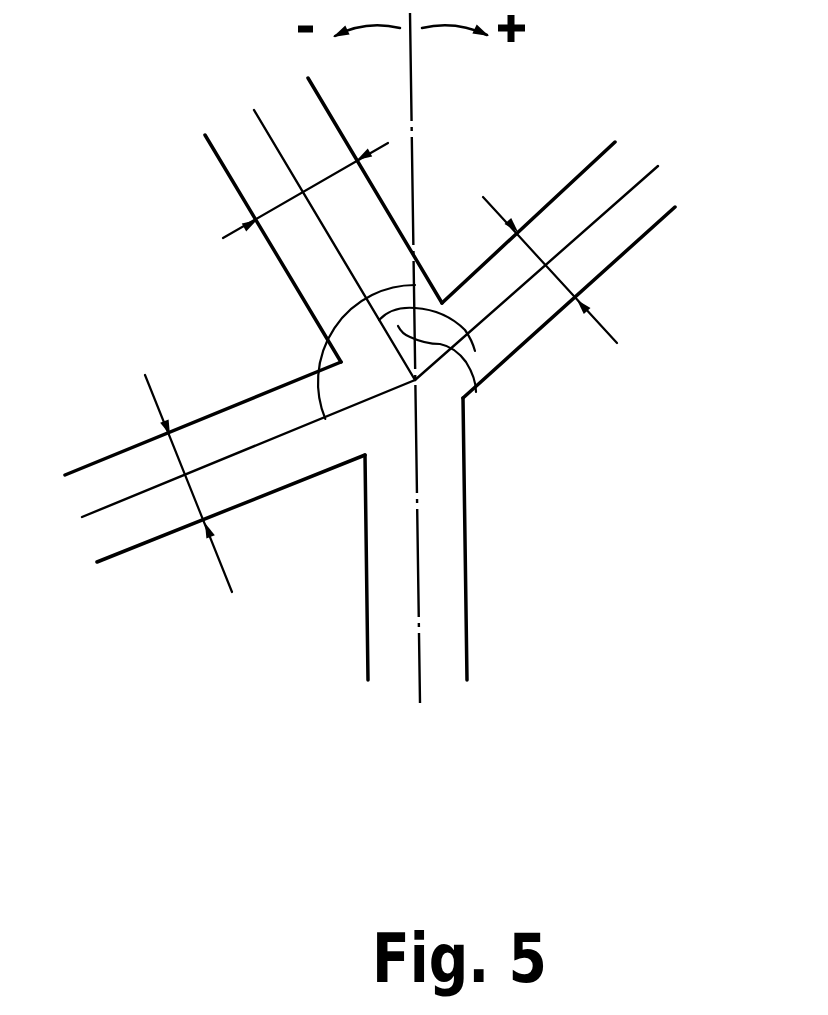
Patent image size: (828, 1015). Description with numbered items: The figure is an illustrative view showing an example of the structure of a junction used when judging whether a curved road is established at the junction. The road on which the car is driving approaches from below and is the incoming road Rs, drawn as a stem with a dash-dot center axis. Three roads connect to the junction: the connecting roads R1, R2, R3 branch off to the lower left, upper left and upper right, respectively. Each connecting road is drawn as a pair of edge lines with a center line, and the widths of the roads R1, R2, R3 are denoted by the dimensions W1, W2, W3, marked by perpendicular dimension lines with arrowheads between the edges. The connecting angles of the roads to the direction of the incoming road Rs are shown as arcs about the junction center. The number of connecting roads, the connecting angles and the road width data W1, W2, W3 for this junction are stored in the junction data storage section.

The connecting road R1 is at (240, 488).
The connecting road R2 is at (295, 229).
The connecting road R3 is at (545, 251).
The incoming road Rs is at (451, 358).
The road width W1 is at (221, 490).
The road width W2 is at (285, 220).
The road width W3 is at (576, 270).